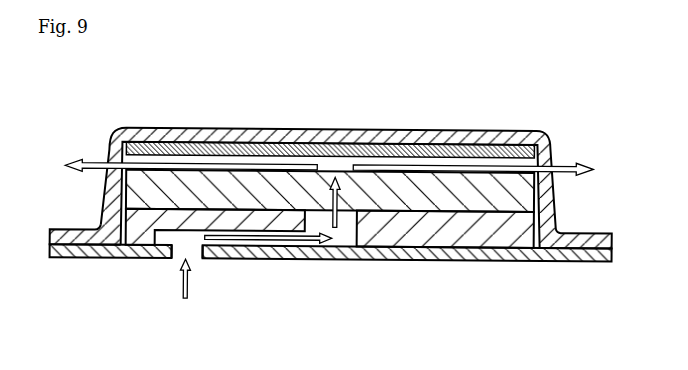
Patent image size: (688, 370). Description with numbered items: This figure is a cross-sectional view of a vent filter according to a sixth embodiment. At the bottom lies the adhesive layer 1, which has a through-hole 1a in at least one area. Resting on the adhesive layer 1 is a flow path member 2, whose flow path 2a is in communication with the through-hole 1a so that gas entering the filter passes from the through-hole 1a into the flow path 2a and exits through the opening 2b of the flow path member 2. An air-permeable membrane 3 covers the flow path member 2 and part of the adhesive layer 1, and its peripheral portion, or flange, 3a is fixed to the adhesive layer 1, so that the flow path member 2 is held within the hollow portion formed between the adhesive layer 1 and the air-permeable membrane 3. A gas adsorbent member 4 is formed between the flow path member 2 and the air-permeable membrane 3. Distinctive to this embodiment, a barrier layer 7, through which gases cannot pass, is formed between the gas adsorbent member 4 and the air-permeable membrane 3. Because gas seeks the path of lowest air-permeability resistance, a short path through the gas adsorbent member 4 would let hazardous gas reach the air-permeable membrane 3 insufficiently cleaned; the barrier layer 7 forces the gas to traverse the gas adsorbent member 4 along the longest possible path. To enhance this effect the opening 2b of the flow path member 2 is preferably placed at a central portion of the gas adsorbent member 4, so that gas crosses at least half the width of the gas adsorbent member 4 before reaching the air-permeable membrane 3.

The adhesive layer 1 is at (88, 250).
The through-hole 1a is at (195, 258).
The flow path member 2 is at (142, 246).
The flow path 2a is at (278, 250).
The opening 2b is at (349, 230).
The air-permeable membrane 3 is at (413, 130).
The peripheral portion (flange) 3a is at (596, 242).
The gas adsorbent member 4 is at (164, 188).
The barrier layer 7 is at (496, 148).